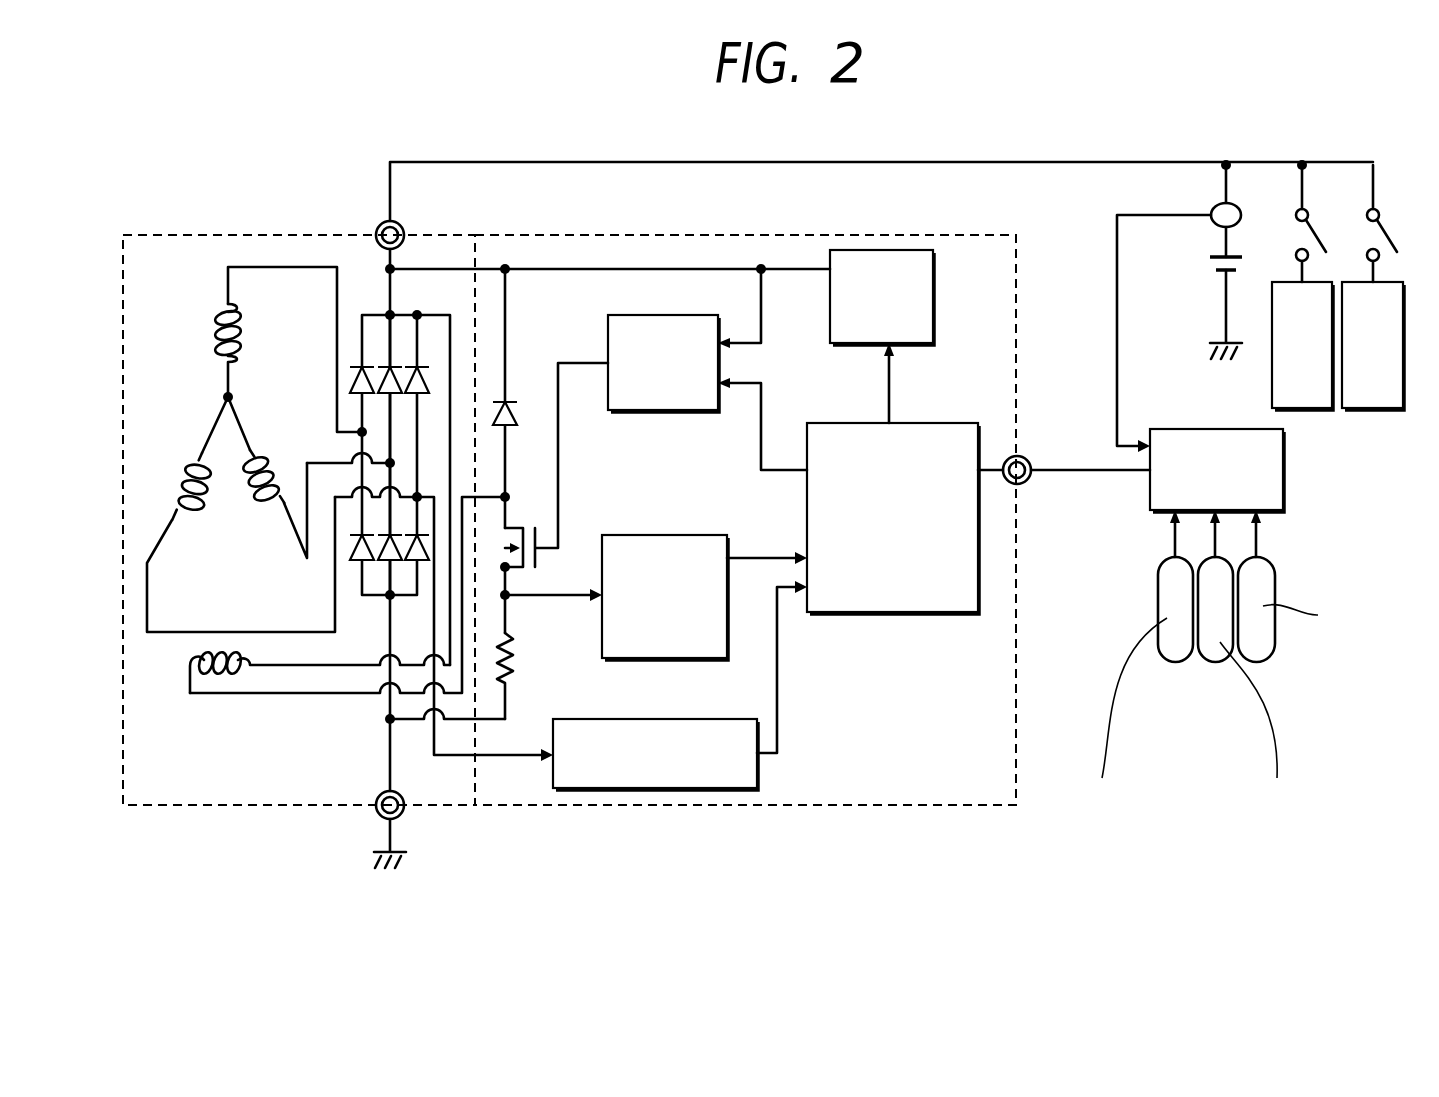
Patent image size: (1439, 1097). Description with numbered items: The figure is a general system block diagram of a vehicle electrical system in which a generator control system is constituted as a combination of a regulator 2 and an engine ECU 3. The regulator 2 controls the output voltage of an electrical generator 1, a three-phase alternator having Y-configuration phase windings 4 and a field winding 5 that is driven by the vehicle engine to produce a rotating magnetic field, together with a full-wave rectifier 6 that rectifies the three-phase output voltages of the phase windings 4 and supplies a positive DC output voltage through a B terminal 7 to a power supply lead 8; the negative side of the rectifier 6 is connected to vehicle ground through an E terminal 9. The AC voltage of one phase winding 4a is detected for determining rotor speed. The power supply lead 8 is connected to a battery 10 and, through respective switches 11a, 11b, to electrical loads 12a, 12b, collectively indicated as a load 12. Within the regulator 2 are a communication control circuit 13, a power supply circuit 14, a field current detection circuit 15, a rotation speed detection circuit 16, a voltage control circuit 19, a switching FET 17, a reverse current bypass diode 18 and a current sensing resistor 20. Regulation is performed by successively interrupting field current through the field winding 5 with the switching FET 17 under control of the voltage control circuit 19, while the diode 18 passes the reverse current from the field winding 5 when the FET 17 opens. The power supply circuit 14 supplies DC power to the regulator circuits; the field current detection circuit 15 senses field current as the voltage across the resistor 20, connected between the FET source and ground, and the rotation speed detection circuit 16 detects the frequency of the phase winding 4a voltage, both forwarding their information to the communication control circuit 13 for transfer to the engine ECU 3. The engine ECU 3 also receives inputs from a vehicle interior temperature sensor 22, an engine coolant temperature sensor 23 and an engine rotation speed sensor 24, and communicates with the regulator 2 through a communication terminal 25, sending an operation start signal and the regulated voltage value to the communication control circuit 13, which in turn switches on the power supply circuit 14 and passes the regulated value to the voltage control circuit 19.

The electrical generator 1 is at (216, 226).
The regulator 2 is at (684, 816).
The engine ECU 3 is at (1196, 429).
The phase windings 4 is at (350, 514).
The phase winding 4a is at (350, 514).
The field winding 5 is at (190, 661).
The full-wave rectifier 6 is at (373, 300).
The B terminal 7 is at (386, 221).
The power supply lead 8 is at (620, 162).
The E terminal 9 is at (398, 812).
The battery 10 is at (1205, 262).
The switch 11a is at (1319, 250).
The switch 11b is at (1390, 250).
The load 12 is at (1342, 404).
The electrical load 12a is at (1308, 409).
The electrical load 12b is at (1377, 382).
The communication control circuit 13 is at (900, 612).
The power supply circuit 14 is at (934, 293).
The field current detection circuit 15 is at (680, 535).
The rotation speed detection circuit 16 is at (758, 772).
The switching FET 17 is at (523, 528).
The reverse current bypass diode 18 is at (511, 402).
The voltage control circuit 19 is at (655, 410).
The current sensing resistor 20 is at (515, 665).
The vehicle interior temperature sensor 22 is at (1178, 662).
The engine coolant temperature sensor 23 is at (1222, 643).
The engine rotation speed sensor 24 is at (1262, 663).
The communication terminal 25 is at (1030, 456).